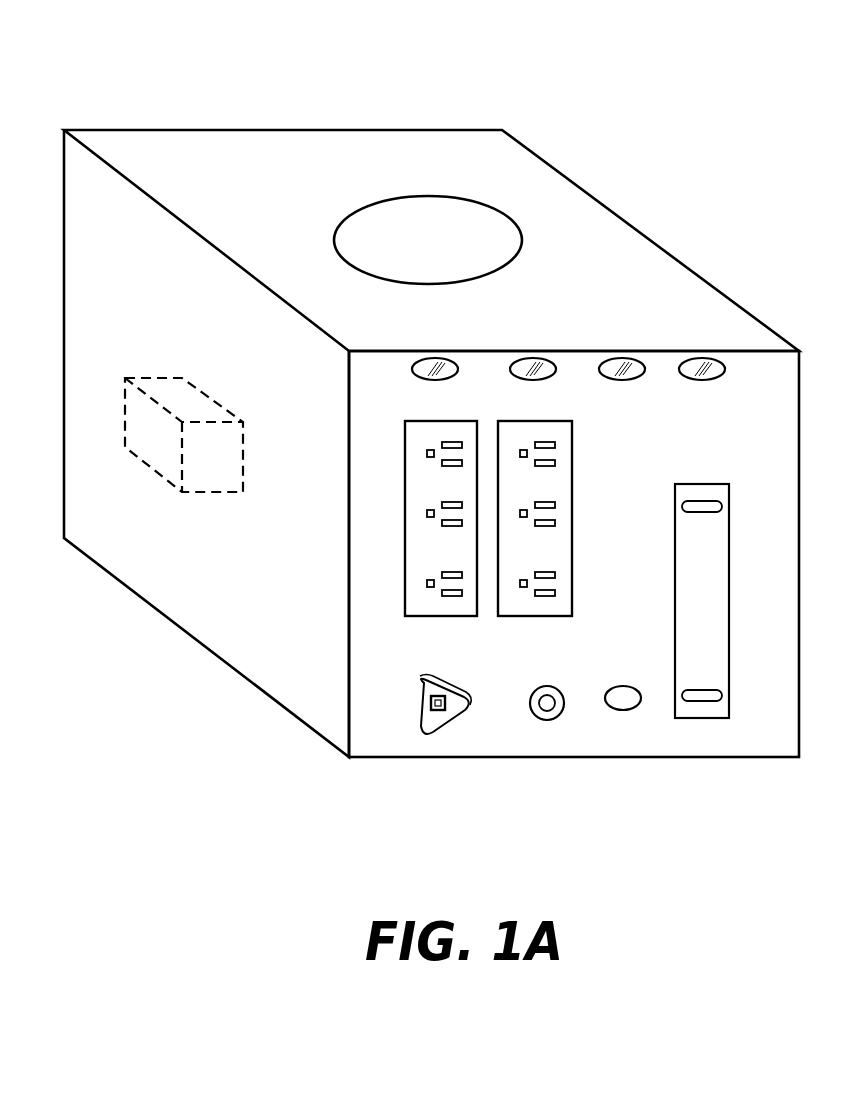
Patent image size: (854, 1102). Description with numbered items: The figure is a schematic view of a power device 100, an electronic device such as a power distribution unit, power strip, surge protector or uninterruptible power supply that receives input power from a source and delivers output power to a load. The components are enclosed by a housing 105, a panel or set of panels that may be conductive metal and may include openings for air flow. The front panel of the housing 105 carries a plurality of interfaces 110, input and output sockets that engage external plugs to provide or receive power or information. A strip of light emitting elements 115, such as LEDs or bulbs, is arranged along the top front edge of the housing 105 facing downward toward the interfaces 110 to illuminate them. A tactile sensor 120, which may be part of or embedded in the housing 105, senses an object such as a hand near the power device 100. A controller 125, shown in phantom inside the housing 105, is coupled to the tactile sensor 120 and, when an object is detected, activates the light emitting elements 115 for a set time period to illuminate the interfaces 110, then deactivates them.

The power device 100 is at (158, 70).
The housing 105 is at (612, 206).
The interfaces 110 is at (447, 618).
The light emitting elements 115 is at (518, 358).
The tactile sensor 120 is at (372, 205).
The controller 125 is at (124, 409).